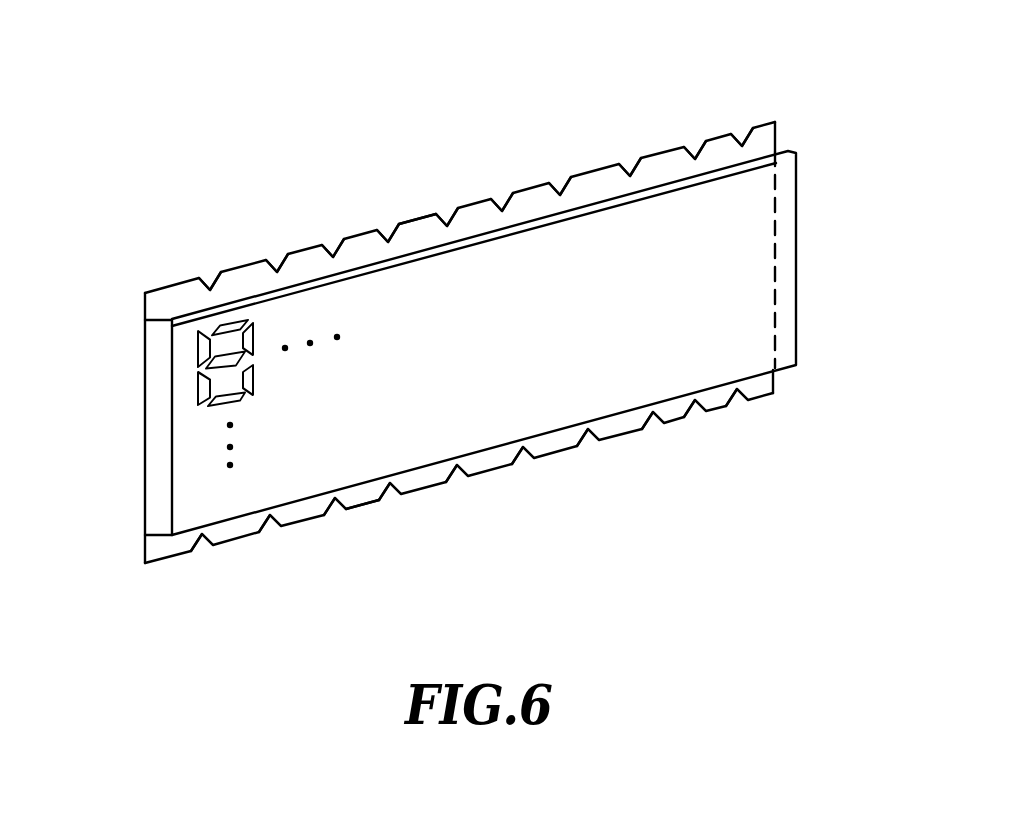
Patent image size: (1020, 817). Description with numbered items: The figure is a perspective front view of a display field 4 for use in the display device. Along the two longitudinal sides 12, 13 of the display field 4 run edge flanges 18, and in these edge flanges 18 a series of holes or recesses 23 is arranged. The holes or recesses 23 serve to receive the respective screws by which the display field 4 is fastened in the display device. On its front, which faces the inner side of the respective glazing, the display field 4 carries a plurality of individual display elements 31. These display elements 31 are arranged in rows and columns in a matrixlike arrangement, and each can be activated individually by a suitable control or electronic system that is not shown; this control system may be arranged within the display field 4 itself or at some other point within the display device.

The display field 4 is at (833, 277).
The longitudinal side 12 is at (668, 182).
The longitudinal side 13 is at (717, 392).
The edge flange 18 is at (403, 221).
The hole or recess 23 is at (275, 258).
The display element 31 is at (187, 369).